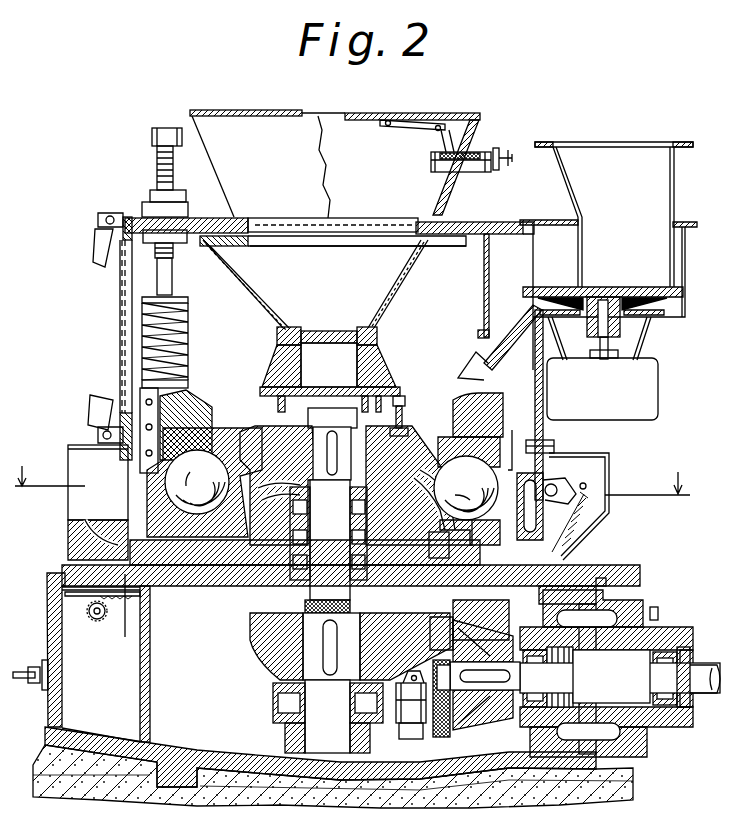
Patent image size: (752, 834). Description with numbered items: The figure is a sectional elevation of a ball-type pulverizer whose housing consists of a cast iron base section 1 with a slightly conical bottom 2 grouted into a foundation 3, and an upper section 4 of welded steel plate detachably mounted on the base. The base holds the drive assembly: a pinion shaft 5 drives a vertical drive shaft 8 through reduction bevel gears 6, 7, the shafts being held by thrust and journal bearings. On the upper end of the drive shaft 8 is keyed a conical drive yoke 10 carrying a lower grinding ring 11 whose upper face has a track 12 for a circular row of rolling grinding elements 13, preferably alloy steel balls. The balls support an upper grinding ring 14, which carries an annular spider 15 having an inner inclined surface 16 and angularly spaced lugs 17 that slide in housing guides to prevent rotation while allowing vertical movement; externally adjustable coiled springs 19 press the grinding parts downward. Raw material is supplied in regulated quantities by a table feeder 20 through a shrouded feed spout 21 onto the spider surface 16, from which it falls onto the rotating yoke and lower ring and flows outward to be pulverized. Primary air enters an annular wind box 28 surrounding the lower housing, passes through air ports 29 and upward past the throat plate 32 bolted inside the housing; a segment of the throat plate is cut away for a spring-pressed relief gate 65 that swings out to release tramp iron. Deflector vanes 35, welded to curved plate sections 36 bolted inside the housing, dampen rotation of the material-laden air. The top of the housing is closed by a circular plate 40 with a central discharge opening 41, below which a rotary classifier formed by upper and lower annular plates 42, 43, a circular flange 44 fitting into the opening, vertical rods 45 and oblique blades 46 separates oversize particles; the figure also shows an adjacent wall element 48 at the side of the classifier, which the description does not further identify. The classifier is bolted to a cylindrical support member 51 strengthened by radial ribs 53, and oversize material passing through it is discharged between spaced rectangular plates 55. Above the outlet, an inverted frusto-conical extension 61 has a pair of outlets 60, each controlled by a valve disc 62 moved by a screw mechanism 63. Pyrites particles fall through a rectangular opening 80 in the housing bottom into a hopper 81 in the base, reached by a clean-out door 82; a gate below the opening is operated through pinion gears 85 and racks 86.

The base section 1 is at (50, 612).
The conical bottom 2 is at (211, 757).
The foundation 3 is at (405, 812).
The upper section 4 is at (120, 466).
The pinion shaft 5 is at (708, 680).
The reduction bevel gear 6 is at (482, 714).
The reduction bevel gear 7 is at (496, 626).
The drive shaft 8 is at (314, 652).
The drive yoke 10 is at (400, 500).
The lower grinding ring 11 is at (442, 524).
The track 12 is at (480, 524).
The rolling grinding elements 13 is at (467, 478).
The upper grinding ring 14 is at (238, 455).
The annular spider 15 is at (192, 407).
The inner inclined surface 16 is at (470, 402).
The lugs 17 is at (155, 407).
The coiled springs 19 is at (192, 325).
The table feeder 20 is at (692, 280).
The feed spout 21 is at (480, 336).
The wind box 28 is at (614, 472).
The air ports 29 is at (110, 542).
The throat plate 32 is at (149, 486).
The deflector vanes 35 is at (547, 438).
The curved plate sections 36 is at (562, 462).
The circular plate 40 is at (474, 222).
The discharge opening 41 is at (371, 218).
The upper annular plate 42 is at (258, 242).
The lower annular plate 43 is at (302, 328).
The circular flange 44 is at (260, 228).
The rods 45 is at (406, 288).
The blades 46 is at (414, 258).
The wall 48 is at (474, 270).
The cylindrical support member 51 is at (329, 359).
The radial ribs 53 is at (378, 390).
The rectangular plates 55 is at (406, 406).
The outlets 60 is at (274, 103).
The frusto-conical extension 61 is at (236, 142).
The valve disc 62 is at (390, 126).
The screw mechanism 63 is at (472, 152).
The relief gate 65 is at (522, 470).
The rectangular opening 80 is at (128, 620).
The hopper 81 is at (101, 700).
The clean-out door 82 is at (44, 702).
The pinion gears 85 is at (93, 620).
The racks 86 is at (116, 600).